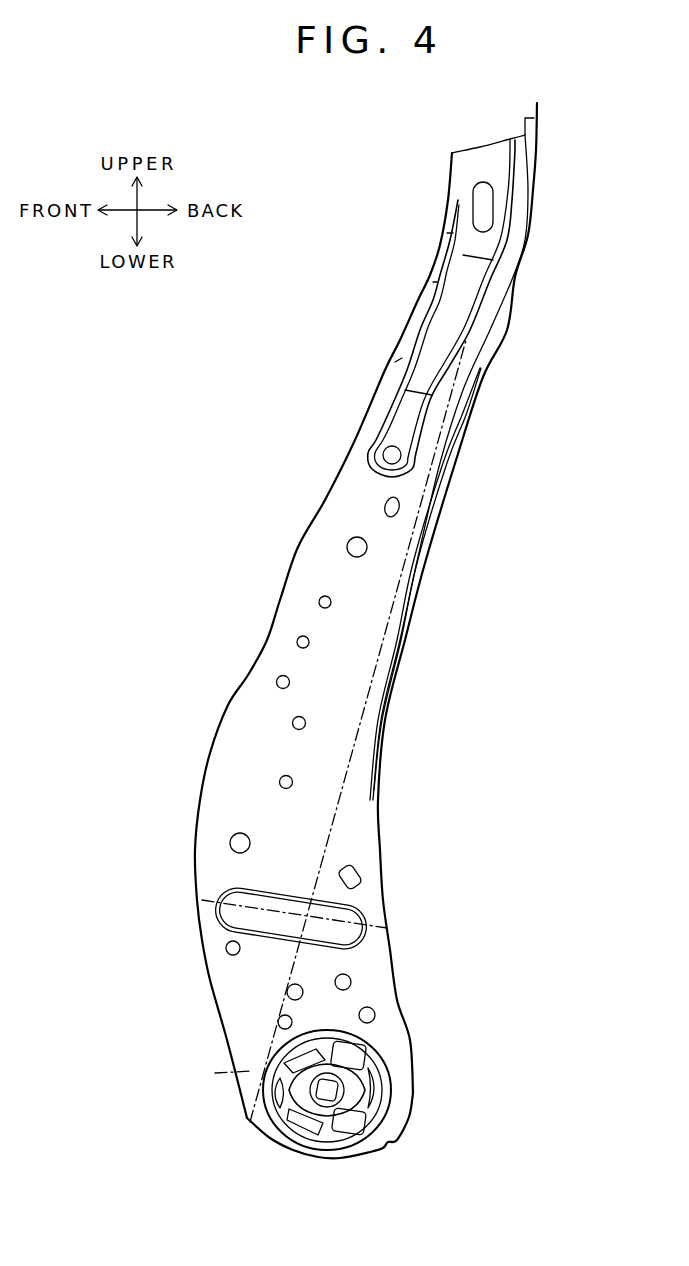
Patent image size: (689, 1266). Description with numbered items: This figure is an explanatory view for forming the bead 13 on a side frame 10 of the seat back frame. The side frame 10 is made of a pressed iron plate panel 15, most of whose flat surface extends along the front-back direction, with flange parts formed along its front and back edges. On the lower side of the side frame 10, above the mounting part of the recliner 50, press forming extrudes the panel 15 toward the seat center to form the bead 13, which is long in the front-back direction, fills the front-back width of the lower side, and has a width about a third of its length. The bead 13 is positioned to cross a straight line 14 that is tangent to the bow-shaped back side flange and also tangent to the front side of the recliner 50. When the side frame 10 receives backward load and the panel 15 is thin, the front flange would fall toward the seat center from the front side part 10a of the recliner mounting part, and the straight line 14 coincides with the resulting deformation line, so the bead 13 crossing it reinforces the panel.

The side frame 10 is at (295, 557).
The front side part of the mounting part of the recliner 10a is at (248, 1072).
The bead 13 is at (268, 890).
The straight line 14 is at (345, 802).
The panel 15 is at (282, 762).
The recliner 50 is at (352, 1090).